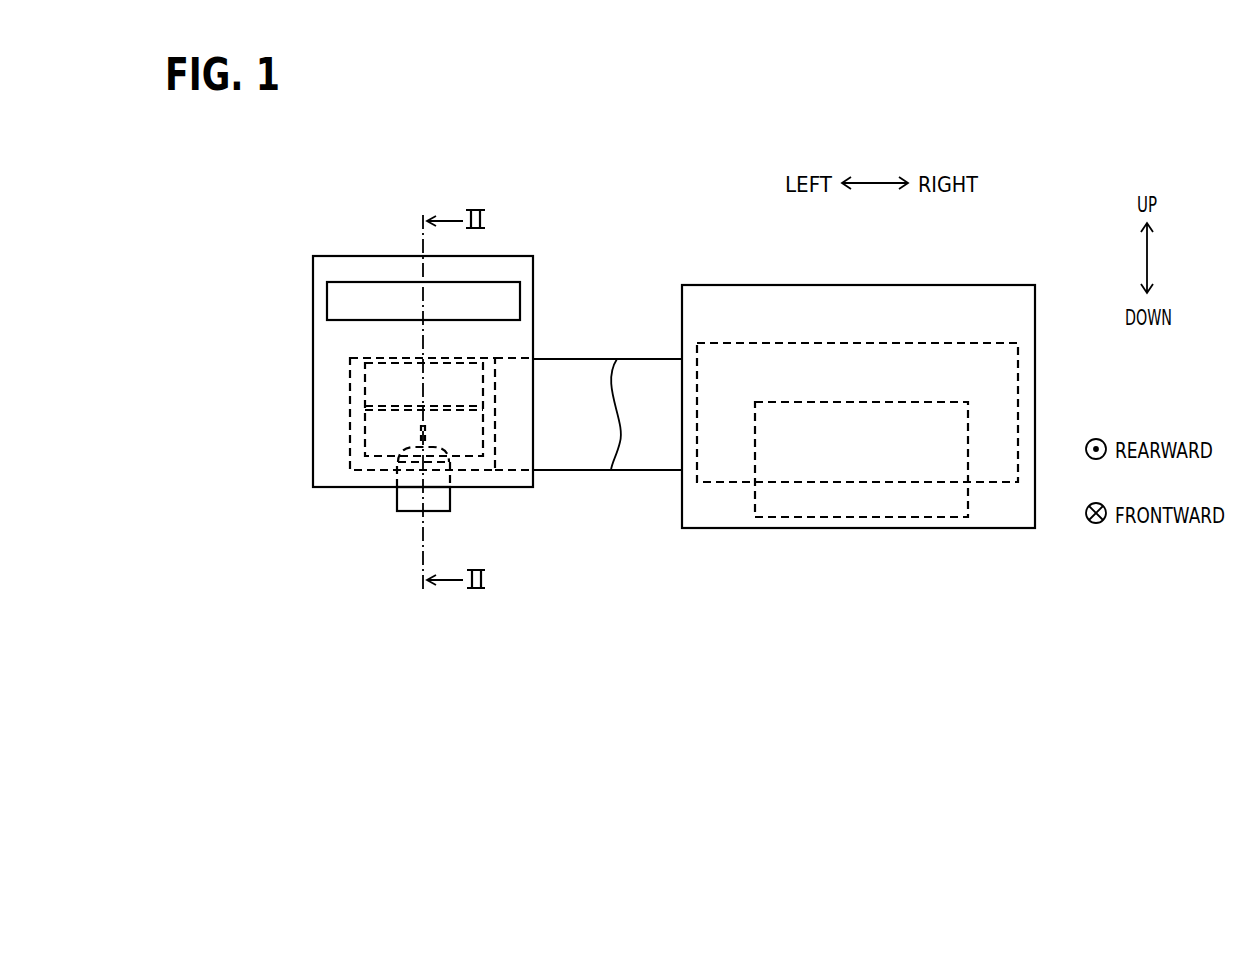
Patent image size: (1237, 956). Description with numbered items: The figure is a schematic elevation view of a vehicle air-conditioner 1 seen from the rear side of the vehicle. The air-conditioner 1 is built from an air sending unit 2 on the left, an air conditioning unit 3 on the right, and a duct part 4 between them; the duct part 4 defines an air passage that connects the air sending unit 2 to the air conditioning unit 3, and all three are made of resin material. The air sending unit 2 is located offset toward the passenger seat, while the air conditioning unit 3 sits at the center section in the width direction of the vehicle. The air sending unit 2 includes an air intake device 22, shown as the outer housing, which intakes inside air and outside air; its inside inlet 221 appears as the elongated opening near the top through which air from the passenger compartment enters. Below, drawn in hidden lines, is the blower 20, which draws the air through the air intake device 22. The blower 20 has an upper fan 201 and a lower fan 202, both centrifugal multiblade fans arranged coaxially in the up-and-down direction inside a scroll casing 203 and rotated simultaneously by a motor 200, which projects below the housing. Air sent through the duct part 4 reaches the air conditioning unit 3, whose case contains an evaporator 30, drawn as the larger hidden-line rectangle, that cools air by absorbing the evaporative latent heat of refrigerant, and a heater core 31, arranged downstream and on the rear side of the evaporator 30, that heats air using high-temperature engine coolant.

The air-conditioner 1 is at (617, 586).
The air sending unit 2 is at (540, 513).
The air conditioning unit 3 is at (656, 522).
The duct part 4 is at (590, 470).
The blower 20 is at (379, 508).
The air intake device 22 is at (551, 262).
The evaporator 30 is at (952, 343).
The heater core 31 is at (968, 505).
The motor 200 is at (414, 478).
The upper fan 201 is at (371, 371).
The lower fan 202 is at (363, 446).
The scroll casing 203 is at (352, 400).
The inside inlet 221 is at (360, 290).